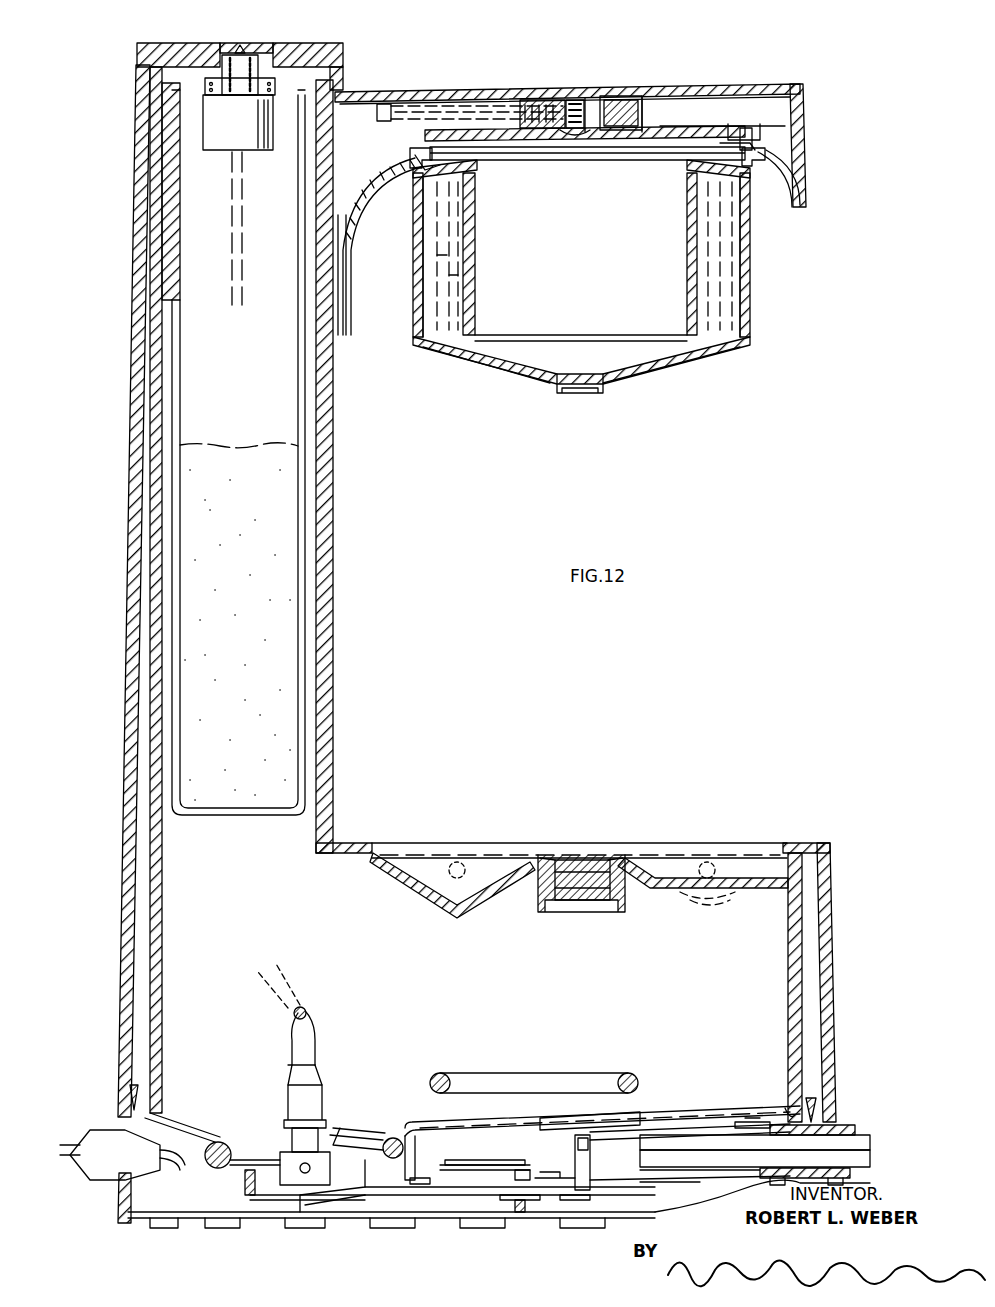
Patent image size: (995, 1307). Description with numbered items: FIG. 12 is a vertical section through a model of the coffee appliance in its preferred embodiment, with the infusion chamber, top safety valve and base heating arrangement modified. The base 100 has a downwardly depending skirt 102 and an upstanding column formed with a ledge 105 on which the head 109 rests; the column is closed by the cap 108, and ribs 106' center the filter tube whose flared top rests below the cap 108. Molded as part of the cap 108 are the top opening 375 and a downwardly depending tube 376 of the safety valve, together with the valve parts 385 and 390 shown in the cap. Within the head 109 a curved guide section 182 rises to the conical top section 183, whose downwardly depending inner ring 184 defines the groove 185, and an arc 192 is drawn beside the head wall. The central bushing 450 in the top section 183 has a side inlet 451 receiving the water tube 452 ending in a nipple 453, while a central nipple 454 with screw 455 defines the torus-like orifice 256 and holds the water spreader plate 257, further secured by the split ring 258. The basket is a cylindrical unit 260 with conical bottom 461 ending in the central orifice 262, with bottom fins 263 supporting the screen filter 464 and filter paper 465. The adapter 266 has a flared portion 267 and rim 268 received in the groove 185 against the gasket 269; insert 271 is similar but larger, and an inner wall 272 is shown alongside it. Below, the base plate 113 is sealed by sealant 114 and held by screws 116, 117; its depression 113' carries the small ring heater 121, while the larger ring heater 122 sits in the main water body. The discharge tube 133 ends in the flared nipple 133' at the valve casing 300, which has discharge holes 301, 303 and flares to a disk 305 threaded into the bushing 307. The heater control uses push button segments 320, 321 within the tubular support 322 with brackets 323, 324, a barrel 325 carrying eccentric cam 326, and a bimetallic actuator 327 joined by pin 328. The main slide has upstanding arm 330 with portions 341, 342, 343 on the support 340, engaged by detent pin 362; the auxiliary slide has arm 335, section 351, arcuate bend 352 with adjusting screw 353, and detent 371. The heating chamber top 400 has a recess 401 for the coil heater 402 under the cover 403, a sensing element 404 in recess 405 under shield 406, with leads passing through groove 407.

The base 100 is at (836, 966).
The skirt 102 is at (163, 915).
The ledge 105 is at (342, 320).
The ribs 106' is at (185, 449).
The cap 108 is at (345, 60).
The head 109 is at (760, 135).
The base plate 113 is at (690, 1106).
The depression 113' is at (596, 1117).
The sealant 114 is at (790, 1105).
The screw 116 is at (818, 1095).
The screw 117 is at (128, 1090).
The ring heater 121 is at (400, 1140).
The ring heater 122 is at (630, 1073).
The discharge tube 133 is at (315, 1013).
The flared end nipple 133' is at (332, 1096).
The guide section 182 is at (352, 228).
The top section 183 is at (740, 128).
The inner ring 184 is at (733, 125).
The groove 185 is at (766, 155).
The spring arc 192 is at (787, 205).
The orifice 256 is at (590, 108).
The water spreader plate 257 is at (655, 125).
The split ring 258 is at (640, 162).
The cylindrical unit 260 is at (413, 340).
The central orifice 262 is at (578, 393).
The bottom fins 263 is at (530, 365).
The adapter 266 is at (478, 298).
The flared portion 267 is at (475, 178).
The circumferential rim 268 is at (412, 165).
The gasket 269 is at (490, 130).
The insert 271 is at (475, 278).
The inner wall 272 is at (460, 255).
The valve casing 300 is at (292, 1135).
The hole 301 is at (272, 1168).
The hole 303 is at (278, 1140).
The disk 305 is at (335, 1132).
The bushing 307 is at (244, 1186).
The push button segment 320 is at (870, 1142).
The push button segment 321 is at (870, 1160).
The tubular support 322 is at (670, 1115).
The bracket support 323 is at (610, 1118).
The bracket support 324 is at (735, 1120).
The cylindrical barrel 325 is at (850, 1125).
The eccentric cam 326 is at (760, 1175).
The bimetallic actuator 327 is at (462, 1160).
The pin 328 is at (455, 1168).
The upstanding arm 330 is at (575, 1142).
The upstanding arm 335 is at (648, 1178).
The support 340 is at (645, 1200).
The upper horizontal portion 341 is at (575, 1180).
The middle horizontal portion 342 is at (440, 1200).
The lower horizontal portion 343 is at (345, 1220).
The horizontal section 351 is at (595, 1200).
The arcuate bend 352 is at (495, 1202).
The adjusting screw 353 is at (525, 1212).
The detent pin 362 is at (412, 1176).
The detent 371 is at (528, 1170).
The top opening 375 is at (240, 43).
The tube 376 is at (236, 152).
The flange 385 is at (270, 80).
The spring housing 390 is at (240, 80).
The top 400 is at (350, 858).
The recess 401 is at (420, 893).
The coil heater 402 is at (450, 850).
The cover 403 is at (470, 862).
The temperature sensing element 404 is at (583, 858).
The recess 405 is at (550, 895).
The flexible metal shield 406 is at (572, 858).
The groove 407 is at (752, 860).
The valve block 450 is at (642, 113).
The side inlet 451 is at (505, 130).
The water tube 452 is at (430, 125).
The nipple 453 is at (383, 104).
The nipple 454 is at (575, 100).
The screw 455 is at (565, 100).
The conical bottom 461 is at (552, 385).
The screen filter 464 is at (655, 358).
The filter paper 465 is at (608, 335).